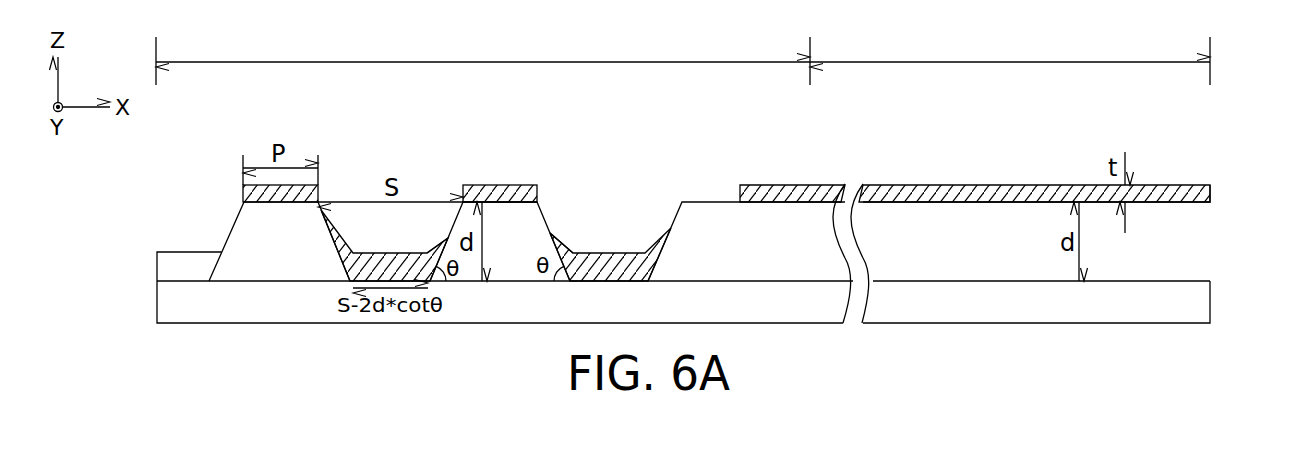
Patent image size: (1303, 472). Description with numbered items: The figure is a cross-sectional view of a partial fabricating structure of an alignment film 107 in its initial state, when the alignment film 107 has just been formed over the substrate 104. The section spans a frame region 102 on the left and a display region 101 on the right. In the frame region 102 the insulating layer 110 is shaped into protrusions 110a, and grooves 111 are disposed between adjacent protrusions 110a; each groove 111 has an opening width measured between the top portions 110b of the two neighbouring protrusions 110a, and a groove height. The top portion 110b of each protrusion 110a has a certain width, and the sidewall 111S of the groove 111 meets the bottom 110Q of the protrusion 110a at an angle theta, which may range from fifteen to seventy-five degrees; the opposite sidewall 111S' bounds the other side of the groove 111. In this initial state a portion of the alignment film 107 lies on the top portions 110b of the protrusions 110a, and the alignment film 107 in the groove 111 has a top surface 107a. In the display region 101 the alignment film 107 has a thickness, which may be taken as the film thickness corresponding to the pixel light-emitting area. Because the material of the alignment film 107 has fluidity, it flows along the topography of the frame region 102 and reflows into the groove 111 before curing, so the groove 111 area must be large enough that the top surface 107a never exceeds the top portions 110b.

The display region 101 is at (1010, 58).
The frame region 102 is at (483, 58).
The substrate 104 is at (1190, 306).
The alignment film 107 is at (1190, 194).
The top surface of the alignment film 107a is at (630, 250).
The insulating layer 110 is at (1188, 246).
The protrusion 110a is at (315, 255).
The top portion of the protrusion 110b is at (502, 201).
The bottom of the protrusion 110Q is at (510, 279).
The groove 111 is at (633, 162).
The sidewall of the groove 111S is at (583, 196).
The opposite side surface of groove 111S' is at (415, 191).